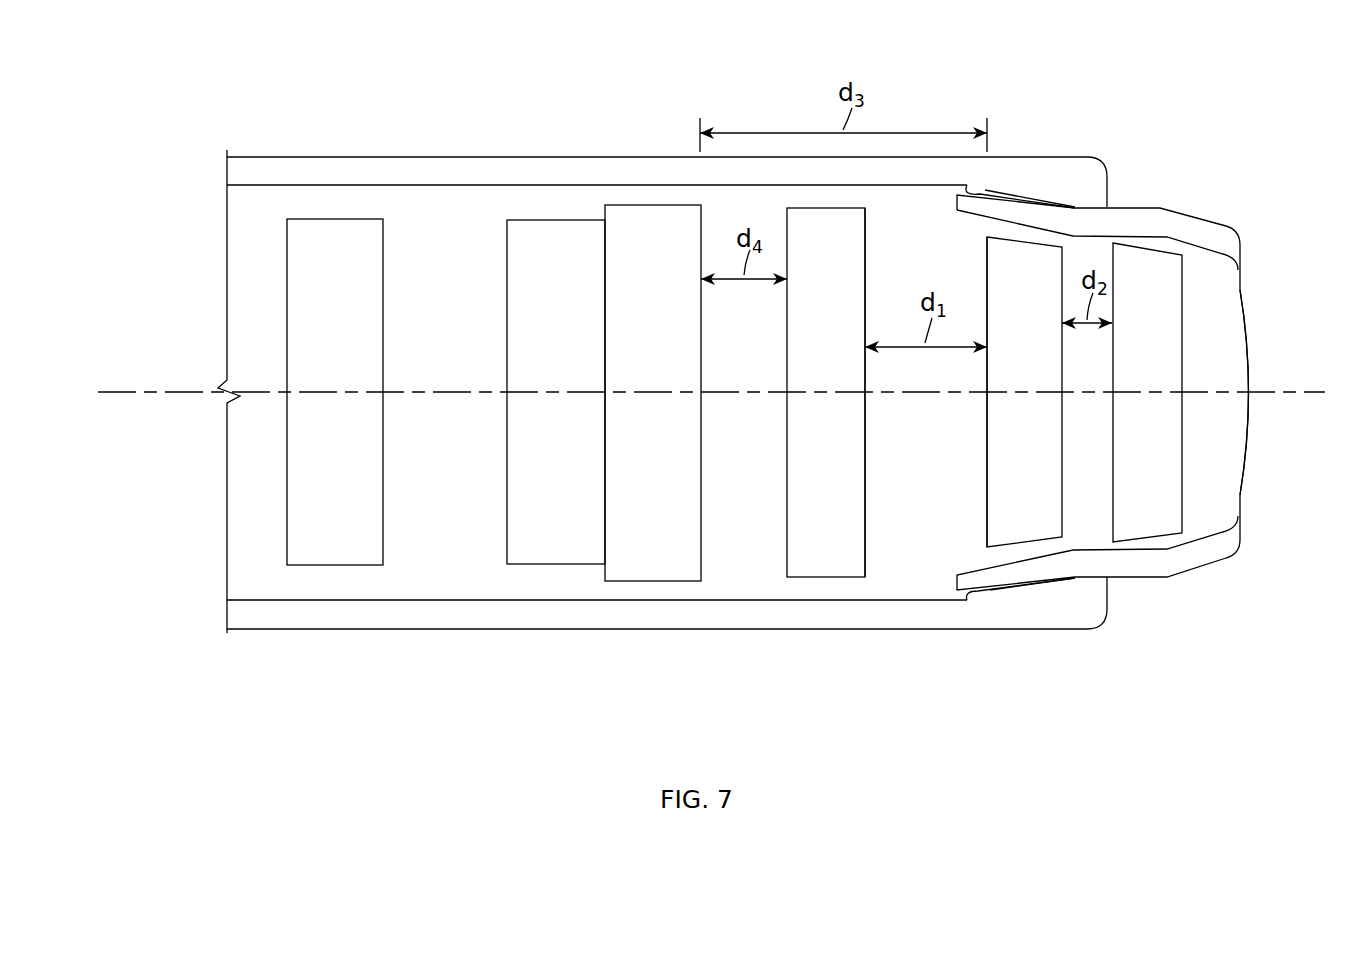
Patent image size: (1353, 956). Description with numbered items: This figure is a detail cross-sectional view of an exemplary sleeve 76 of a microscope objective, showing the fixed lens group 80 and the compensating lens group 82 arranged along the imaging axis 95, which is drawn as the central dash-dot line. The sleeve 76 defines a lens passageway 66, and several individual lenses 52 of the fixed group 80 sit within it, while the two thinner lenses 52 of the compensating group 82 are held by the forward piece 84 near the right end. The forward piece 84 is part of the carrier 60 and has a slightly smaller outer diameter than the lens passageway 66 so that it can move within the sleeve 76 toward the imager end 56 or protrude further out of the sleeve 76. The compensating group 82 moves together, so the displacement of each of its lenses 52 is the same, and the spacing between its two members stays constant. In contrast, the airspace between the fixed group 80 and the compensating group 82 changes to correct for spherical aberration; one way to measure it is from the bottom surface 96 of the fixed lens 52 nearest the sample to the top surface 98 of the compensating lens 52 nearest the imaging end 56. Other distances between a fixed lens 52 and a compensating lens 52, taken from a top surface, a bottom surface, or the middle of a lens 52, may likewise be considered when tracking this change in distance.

The lens 52 is at (305, 540).
The imager end 56 is at (192, 495).
The carrier 60 is at (1111, 152).
The lens passageway 66 is at (222, 290).
The sleeve 76 is at (273, 615).
The fixed lens group 80 is at (551, 450).
The compensating lens group 82 is at (1145, 540).
The forward piece 84 is at (1165, 578).
The imaging axis 95 is at (1280, 390).
The bottom surface 96 is at (870, 539).
The top surface 98 is at (983, 480).